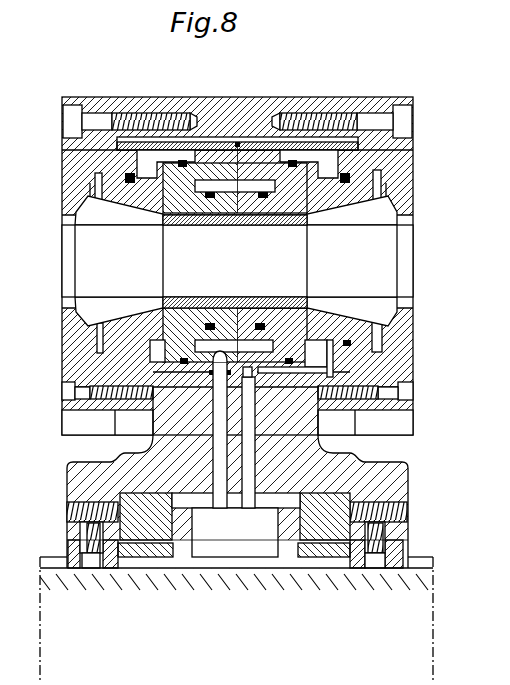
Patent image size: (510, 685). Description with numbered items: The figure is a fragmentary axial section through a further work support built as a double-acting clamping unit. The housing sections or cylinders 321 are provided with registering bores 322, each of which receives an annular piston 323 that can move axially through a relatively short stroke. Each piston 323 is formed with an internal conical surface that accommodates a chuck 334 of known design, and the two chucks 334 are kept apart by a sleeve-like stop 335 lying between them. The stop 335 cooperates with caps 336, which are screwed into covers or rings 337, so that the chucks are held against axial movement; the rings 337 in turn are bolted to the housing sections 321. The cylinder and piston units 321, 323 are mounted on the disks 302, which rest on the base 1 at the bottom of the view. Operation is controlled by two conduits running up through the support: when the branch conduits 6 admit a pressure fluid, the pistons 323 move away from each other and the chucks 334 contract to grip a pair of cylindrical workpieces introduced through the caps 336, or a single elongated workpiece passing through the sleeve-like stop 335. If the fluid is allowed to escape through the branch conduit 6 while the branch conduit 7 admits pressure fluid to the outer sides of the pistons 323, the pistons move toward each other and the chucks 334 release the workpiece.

The base plate 1 is at (420, 627).
The branch conduit 6 is at (222, 493).
The branch conduit 7 is at (250, 493).
The disk 302 is at (80, 481).
The housing section 321 is at (238, 206).
The registering bore 322 is at (163, 165).
The annular piston 323 is at (153, 135).
The chuck 334 is at (92, 216).
The sleeve-like stop 335 is at (310, 219).
The cap 336 is at (80, 333).
The ring 337 is at (77, 153).